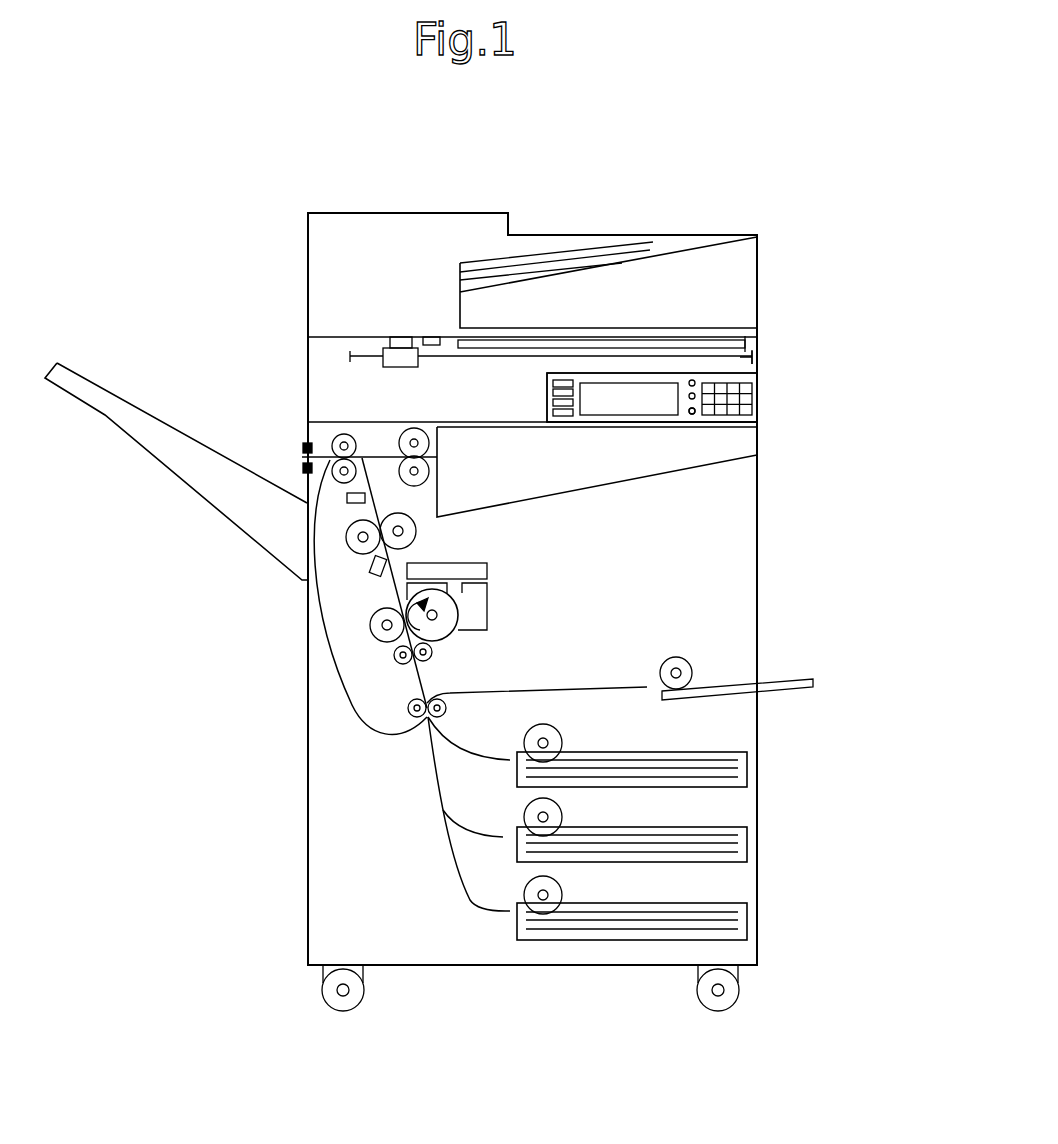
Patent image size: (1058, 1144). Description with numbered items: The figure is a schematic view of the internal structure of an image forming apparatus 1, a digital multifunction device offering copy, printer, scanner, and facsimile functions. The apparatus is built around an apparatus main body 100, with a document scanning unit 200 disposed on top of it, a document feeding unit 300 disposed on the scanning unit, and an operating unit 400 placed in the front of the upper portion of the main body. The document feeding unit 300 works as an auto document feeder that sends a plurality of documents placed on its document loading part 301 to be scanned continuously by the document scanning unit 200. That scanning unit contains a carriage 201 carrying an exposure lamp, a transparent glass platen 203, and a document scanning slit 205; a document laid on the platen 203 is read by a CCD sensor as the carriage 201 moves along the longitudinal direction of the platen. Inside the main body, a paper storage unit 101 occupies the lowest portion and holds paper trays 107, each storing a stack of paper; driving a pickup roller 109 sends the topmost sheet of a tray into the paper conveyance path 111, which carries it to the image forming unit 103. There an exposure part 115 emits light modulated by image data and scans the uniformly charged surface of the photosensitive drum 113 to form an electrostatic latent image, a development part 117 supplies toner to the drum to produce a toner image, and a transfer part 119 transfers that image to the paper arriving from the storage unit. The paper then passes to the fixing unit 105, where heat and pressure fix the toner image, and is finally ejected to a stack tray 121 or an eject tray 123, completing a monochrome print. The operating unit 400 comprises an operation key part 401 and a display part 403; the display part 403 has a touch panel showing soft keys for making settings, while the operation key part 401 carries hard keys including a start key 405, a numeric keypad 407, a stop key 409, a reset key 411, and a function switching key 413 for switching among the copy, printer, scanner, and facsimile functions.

The image forming apparatus 1 is at (108, 210).
The apparatus main body 100 is at (733, 604).
The paper storage unit 101 is at (779, 783).
The image forming unit 103 is at (353, 614).
The fixing unit 105 is at (362, 550).
The paper tray 107 is at (742, 925).
The pickup roller 109 is at (562, 742).
The paper conveyance path 111 is at (417, 674).
The photosensitive drum 113 is at (445, 638).
The exposure part 115 is at (488, 570).
The development part 117 is at (488, 607).
The transfer part 119 is at (378, 637).
The stack tray 121 is at (221, 523).
The eject tray 123 is at (594, 488).
The document scanning unit 200 is at (331, 366).
The carriage 201 is at (398, 368).
The platen 203 is at (745, 343).
The document scanning slit 205 is at (397, 342).
The document feeding unit 300 is at (567, 234).
The document loading part 301 is at (670, 243).
The operating unit 400 is at (775, 390).
The operation key part 401 is at (761, 421).
The display part 403 is at (605, 400).
The start key 405 is at (692, 414).
The numeric keypad 407 is at (710, 416).
The stop key 409 is at (690, 393).
The reset key 411 is at (755, 367).
The function switching key 413 is at (553, 407).